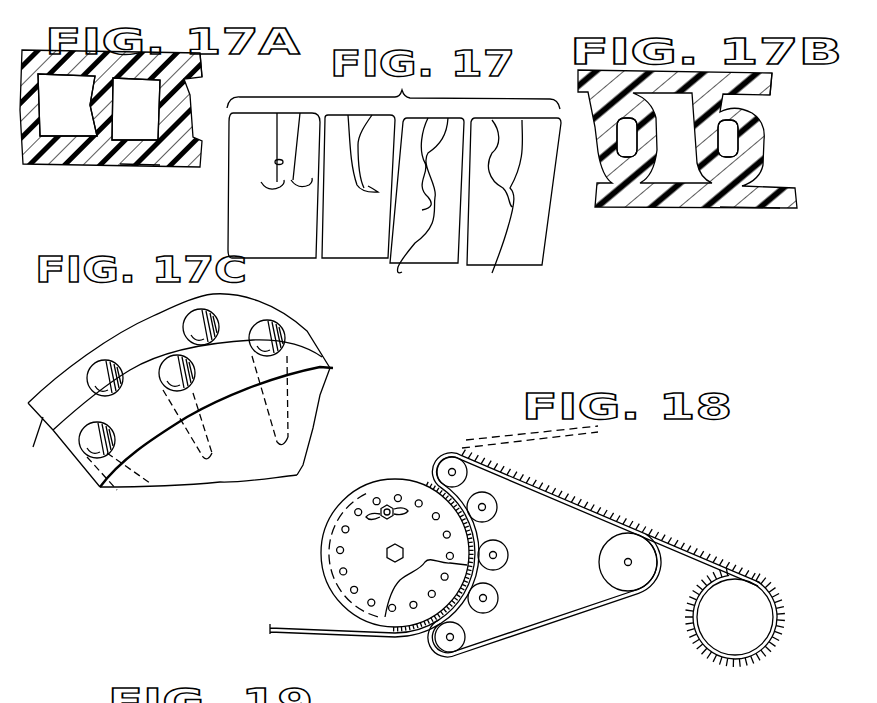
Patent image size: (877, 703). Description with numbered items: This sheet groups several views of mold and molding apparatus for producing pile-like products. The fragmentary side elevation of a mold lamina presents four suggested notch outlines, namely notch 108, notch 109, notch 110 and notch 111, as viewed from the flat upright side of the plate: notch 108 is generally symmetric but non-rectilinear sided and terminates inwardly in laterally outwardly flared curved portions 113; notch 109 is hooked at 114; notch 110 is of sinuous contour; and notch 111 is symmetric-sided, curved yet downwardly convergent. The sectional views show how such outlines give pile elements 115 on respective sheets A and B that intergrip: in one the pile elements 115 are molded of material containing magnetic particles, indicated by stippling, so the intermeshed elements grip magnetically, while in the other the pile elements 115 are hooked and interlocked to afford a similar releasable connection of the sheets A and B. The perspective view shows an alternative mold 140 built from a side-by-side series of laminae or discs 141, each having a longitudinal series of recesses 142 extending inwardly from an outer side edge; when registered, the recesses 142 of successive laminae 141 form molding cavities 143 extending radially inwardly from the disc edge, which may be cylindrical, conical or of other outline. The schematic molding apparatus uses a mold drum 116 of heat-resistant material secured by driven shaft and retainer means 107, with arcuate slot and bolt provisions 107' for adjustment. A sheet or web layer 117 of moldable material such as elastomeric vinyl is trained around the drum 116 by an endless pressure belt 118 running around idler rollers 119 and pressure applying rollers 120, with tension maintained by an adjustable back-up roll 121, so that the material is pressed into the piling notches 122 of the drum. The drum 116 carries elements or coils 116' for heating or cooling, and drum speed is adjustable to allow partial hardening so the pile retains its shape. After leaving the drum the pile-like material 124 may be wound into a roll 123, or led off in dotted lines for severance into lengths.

In FIG. 18, the driven shaft and retainer means 107 is at (404, 542).
In FIG. 18, the arcuate slot and bolt provisions 107' is at (366, 490).
In FIG. 17, the notch 108 is at (276, 163).
In FIG. 17, the notch 109 is at (358, 138).
In FIG. 17, the notch 110 is at (423, 203).
In FIG. 17, the notch 111 is at (510, 205).
In FIG. 17, the laterally outwardly flared curved portions 113 is at (290, 188).
In FIG. 17, the hook 114 is at (355, 193).
In FIG. 17A, the pile elements 115 is at (100, 108).
In FIG. 17B, the pile elements 115 is at (740, 157).
In FIG. 18, the mold drum 116 is at (365, 555).
In FIG. 18, the heating or cooling elements or coils 116' is at (396, 547).
In FIG. 18, the sheet or web layer 117 is at (377, 642).
In FIG. 18, the endless pressure belt 118 is at (541, 626).
In FIG. 18, the idler rollers 119 is at (446, 465).
In FIG. 18, the pressure applying rollers 120 is at (485, 510).
In FIG. 18, the adjustable back-up roll 121 is at (623, 562).
In FIG. 18, the piling notches 122 is at (426, 588).
In FIG. 18, the roll 123 is at (704, 648).
In FIG. 18, the pile-like material 124 is at (553, 441).
In FIG. 17C, the mold 140 is at (72, 478).
In FIG. 17C, the laminae or discs 141 is at (70, 440).
In FIG. 17C, the recesses 142 is at (110, 377).
In FIG. 17C, the molding cavities 143 is at (187, 317).
In FIG. 17A, the sheet A is at (200, 66).
In FIG. 17B, the sheet A is at (763, 89).
In FIG. 17A, the sheet B is at (140, 153).
In FIG. 17B, the sheet B is at (741, 201).